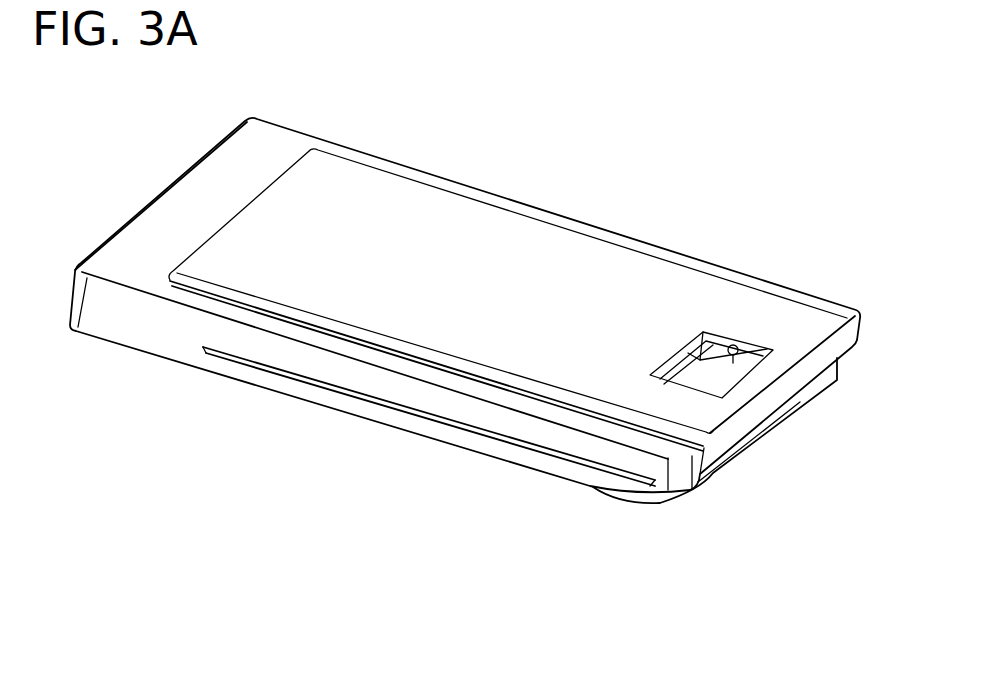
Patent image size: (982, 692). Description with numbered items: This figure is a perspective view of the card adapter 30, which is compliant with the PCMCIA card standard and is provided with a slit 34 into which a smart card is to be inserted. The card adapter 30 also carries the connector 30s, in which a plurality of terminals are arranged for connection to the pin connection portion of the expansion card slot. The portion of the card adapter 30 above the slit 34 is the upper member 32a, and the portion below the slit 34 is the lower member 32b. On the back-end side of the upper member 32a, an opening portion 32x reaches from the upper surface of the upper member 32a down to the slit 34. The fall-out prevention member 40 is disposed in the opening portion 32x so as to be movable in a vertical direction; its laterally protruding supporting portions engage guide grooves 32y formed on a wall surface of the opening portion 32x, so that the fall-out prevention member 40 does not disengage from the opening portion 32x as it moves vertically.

The card adapter 30 is at (549, 163).
The connector 30s is at (146, 206).
The upper member 32a is at (447, 414).
The lower member 32b is at (403, 430).
The opening portion 32x is at (706, 338).
The guide grooves 32y is at (727, 343).
The fall-out prevention member 40 is at (748, 347).
The slit 34 is at (763, 427).